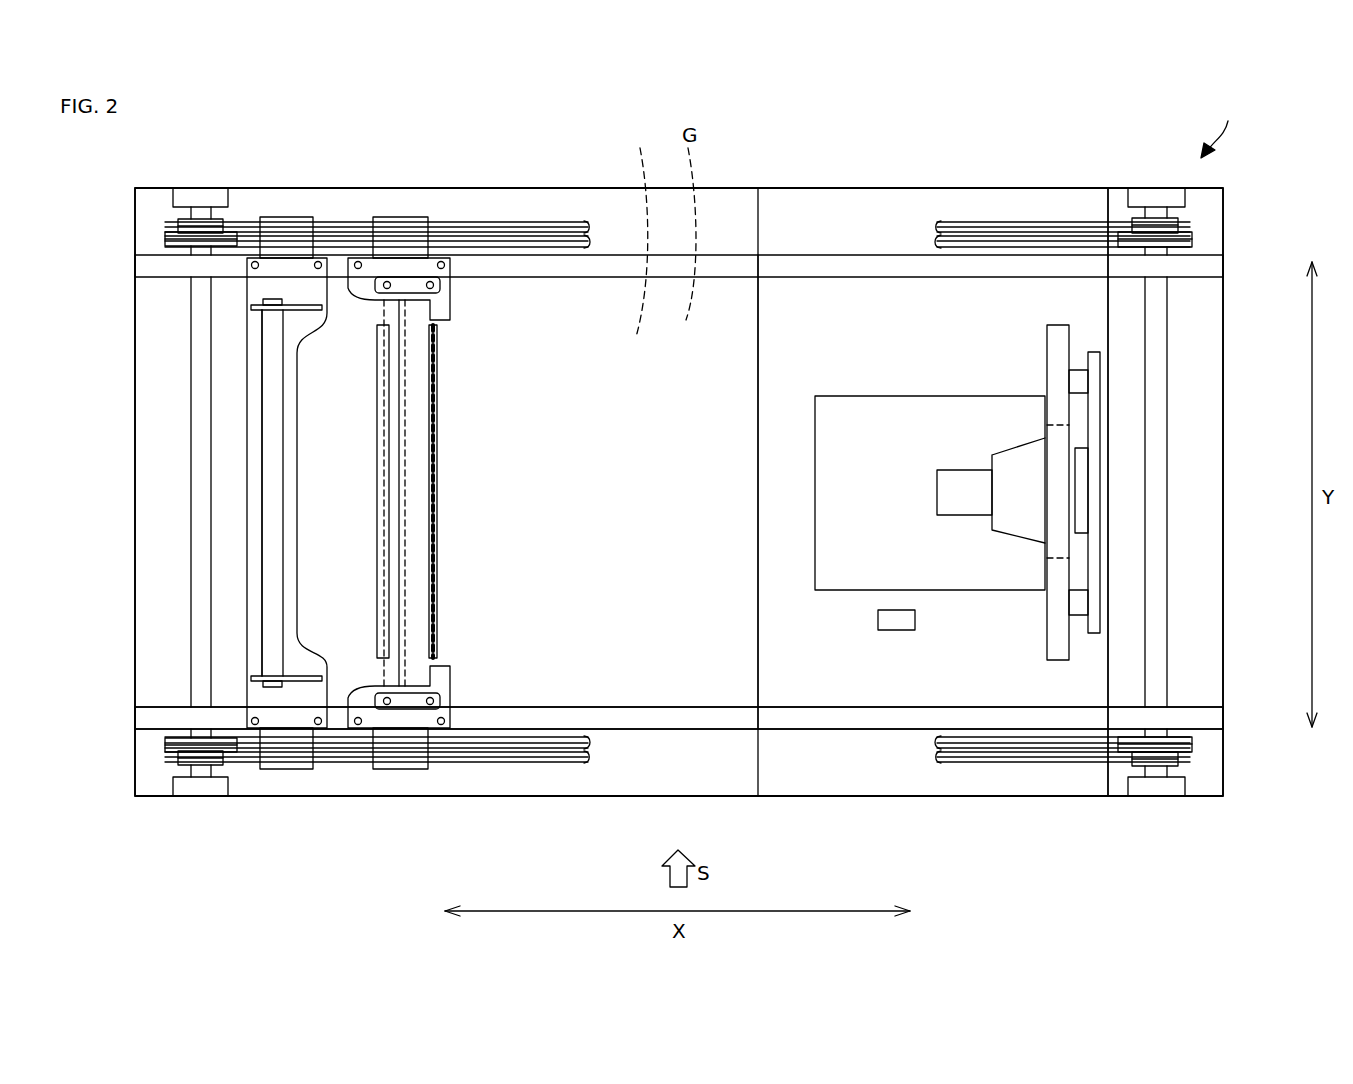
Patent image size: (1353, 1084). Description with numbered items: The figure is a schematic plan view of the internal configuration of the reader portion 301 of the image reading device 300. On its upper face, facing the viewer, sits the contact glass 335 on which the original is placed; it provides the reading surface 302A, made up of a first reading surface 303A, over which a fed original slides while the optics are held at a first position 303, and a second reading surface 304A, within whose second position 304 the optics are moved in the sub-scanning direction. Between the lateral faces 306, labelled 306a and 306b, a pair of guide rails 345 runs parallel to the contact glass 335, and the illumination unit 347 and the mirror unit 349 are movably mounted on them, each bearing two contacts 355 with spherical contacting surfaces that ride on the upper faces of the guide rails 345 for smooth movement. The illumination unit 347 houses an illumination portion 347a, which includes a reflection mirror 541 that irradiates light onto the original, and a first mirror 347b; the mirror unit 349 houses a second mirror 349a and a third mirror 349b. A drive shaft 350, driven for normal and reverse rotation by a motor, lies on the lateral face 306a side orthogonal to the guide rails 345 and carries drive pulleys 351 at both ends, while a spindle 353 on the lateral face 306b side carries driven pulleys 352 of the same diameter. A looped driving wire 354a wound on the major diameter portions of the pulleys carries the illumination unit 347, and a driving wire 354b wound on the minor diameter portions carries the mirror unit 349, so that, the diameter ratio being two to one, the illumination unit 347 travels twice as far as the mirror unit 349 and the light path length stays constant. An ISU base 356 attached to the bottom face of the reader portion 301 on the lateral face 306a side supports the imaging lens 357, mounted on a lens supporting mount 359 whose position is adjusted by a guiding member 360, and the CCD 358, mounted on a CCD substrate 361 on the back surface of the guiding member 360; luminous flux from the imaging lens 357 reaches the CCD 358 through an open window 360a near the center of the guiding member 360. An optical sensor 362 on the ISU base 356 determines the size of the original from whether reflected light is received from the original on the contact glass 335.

The image reading device 300 is at (1230, 127).
The reader portion 301 is at (1223, 205).
The reading surface 302A is at (718, 665).
The first position 303 is at (275, 775).
The first reading surface 303A is at (325, 768).
The second position 304 is at (633, 757).
The second reading surface 304A is at (696, 655).
The partition frame 306 is at (1091, 188).
The lateral face 306a is at (1223, 526).
The lateral face 306b is at (135, 450).
The contact glass 335 is at (645, 230).
The guide rails 345 is at (559, 277).
The illumination unit 347 is at (437, 522).
The illumination portion 347a is at (418, 480).
The first mirror 347b is at (383, 313).
The mirror unit 349 is at (297, 572).
The second mirror 349a is at (275, 529).
The third mirror 349b is at (275, 495).
The drive shaft 350 is at (1165, 385).
The drive pulleys 351 is at (1185, 225).
The driven pulleys 352 is at (178, 228).
The spindle 353 is at (191, 362).
The driving wire 354a is at (475, 232).
The driving wire 354b is at (545, 232).
The contacts 355 is at (360, 225).
The ISU base 356 is at (765, 400).
The imaging lens 357 is at (950, 470).
The CCD 358 is at (1088, 478).
The lens supporting mount 359 is at (866, 396).
The guiding member 360 is at (1047, 620).
The open window 360a is at (1050, 432).
The CCD substrate 361 is at (1100, 430).
The optical sensor 362 is at (900, 632).
The reflection mirror 541 is at (384, 405).